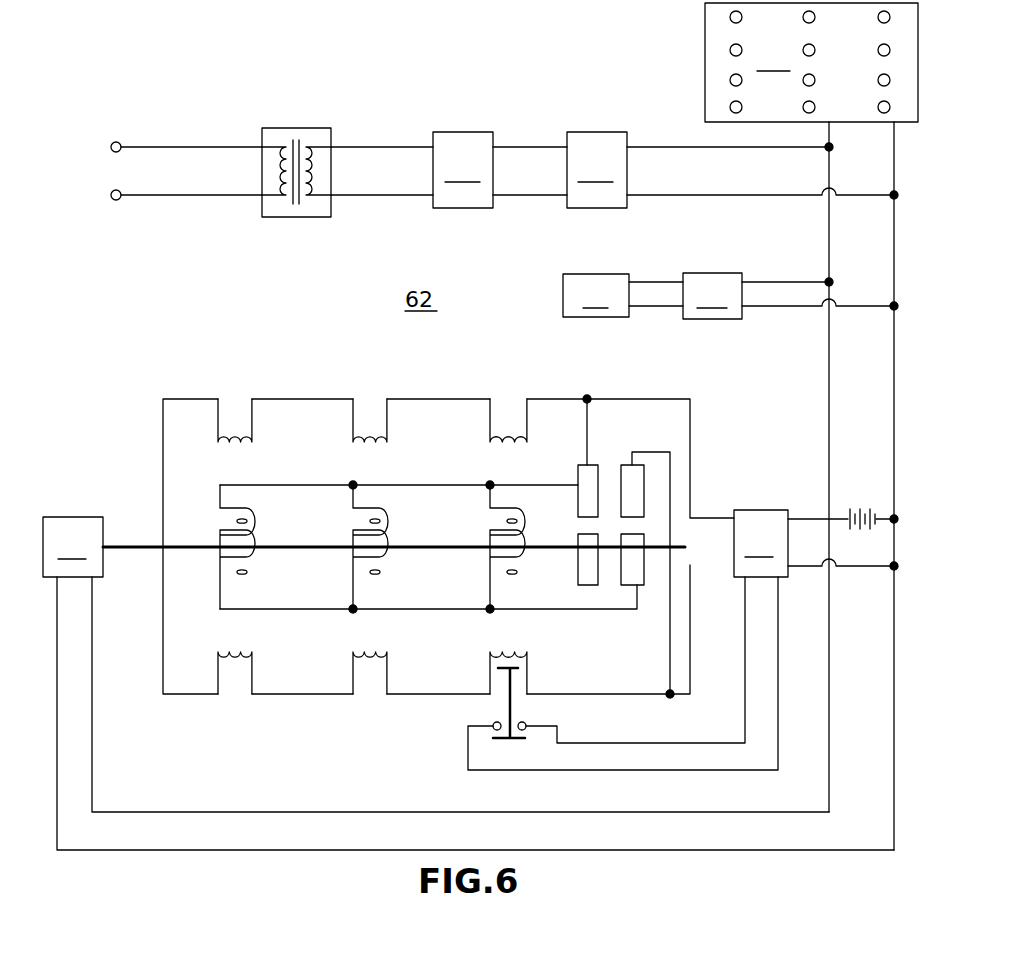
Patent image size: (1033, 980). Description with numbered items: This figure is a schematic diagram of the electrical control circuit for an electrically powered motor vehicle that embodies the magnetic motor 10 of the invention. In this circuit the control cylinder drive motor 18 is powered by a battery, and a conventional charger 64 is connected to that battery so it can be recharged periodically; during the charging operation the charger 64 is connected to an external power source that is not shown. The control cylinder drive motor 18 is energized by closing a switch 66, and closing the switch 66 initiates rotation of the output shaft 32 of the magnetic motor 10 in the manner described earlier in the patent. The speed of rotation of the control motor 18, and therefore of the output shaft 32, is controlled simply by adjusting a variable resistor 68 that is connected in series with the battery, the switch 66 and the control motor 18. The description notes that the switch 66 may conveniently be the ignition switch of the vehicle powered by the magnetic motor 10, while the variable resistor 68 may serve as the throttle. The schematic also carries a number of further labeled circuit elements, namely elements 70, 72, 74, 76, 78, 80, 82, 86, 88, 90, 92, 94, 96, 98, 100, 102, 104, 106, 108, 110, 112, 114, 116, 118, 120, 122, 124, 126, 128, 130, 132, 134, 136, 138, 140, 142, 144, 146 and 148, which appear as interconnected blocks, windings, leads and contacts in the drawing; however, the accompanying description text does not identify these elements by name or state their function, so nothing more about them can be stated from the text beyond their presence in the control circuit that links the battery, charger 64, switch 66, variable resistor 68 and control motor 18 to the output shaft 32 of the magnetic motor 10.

The magnetic motor 10 is at (425, 396).
The control cylinder drive motor 18 is at (596, 295).
The output shaft 32 is at (133, 545).
The charger 64 is at (218, 440).
The switch 66 is at (353, 440).
The variable resistor 68 is at (490, 440).
The rotor winding 70 is at (254, 519).
The rotor winding 72 is at (387, 518).
The rotor winding 74 is at (520, 515).
The brushes 76 is at (578, 585).
The drive unit 78 is at (73, 547).
The brush 80 is at (577, 468).
The brush 82 is at (622, 464).
The rotor connection 86 is at (593, 611).
The control unit 88 is at (761, 543).
The stator lead 90 is at (691, 441).
The stator lead 92 is at (691, 678).
The brush lead 94 is at (586, 413).
The brush lead 96 is at (668, 649).
The relay switch 98 is at (503, 704).
The lead 100 is at (722, 610).
The lead 102 is at (778, 730).
The battery 104 is at (861, 503).
The lead 106 is at (806, 517).
The lead 108 is at (806, 572).
The lead 110 is at (894, 664).
The lead 112 is at (372, 810).
The amplifier 114 is at (712, 296).
The display unit 116 is at (811, 62).
The lead 118 is at (894, 250).
The lead 120 is at (868, 310).
The lead 122 is at (657, 282).
The lead 124 is at (655, 307).
The rectifier 126 is at (597, 170).
The lead 128 is at (672, 147).
The lead 130 is at (683, 196).
The regulator 132 is at (463, 170).
The lead 134 is at (537, 147).
The lead 136 is at (534, 196).
The lead 138 is at (388, 147).
The lead 140 is at (385, 196).
The transformer 142 is at (314, 127).
The lead 144 is at (209, 147).
The lead 146 is at (207, 196).
The power input terminals 148 is at (104, 173).